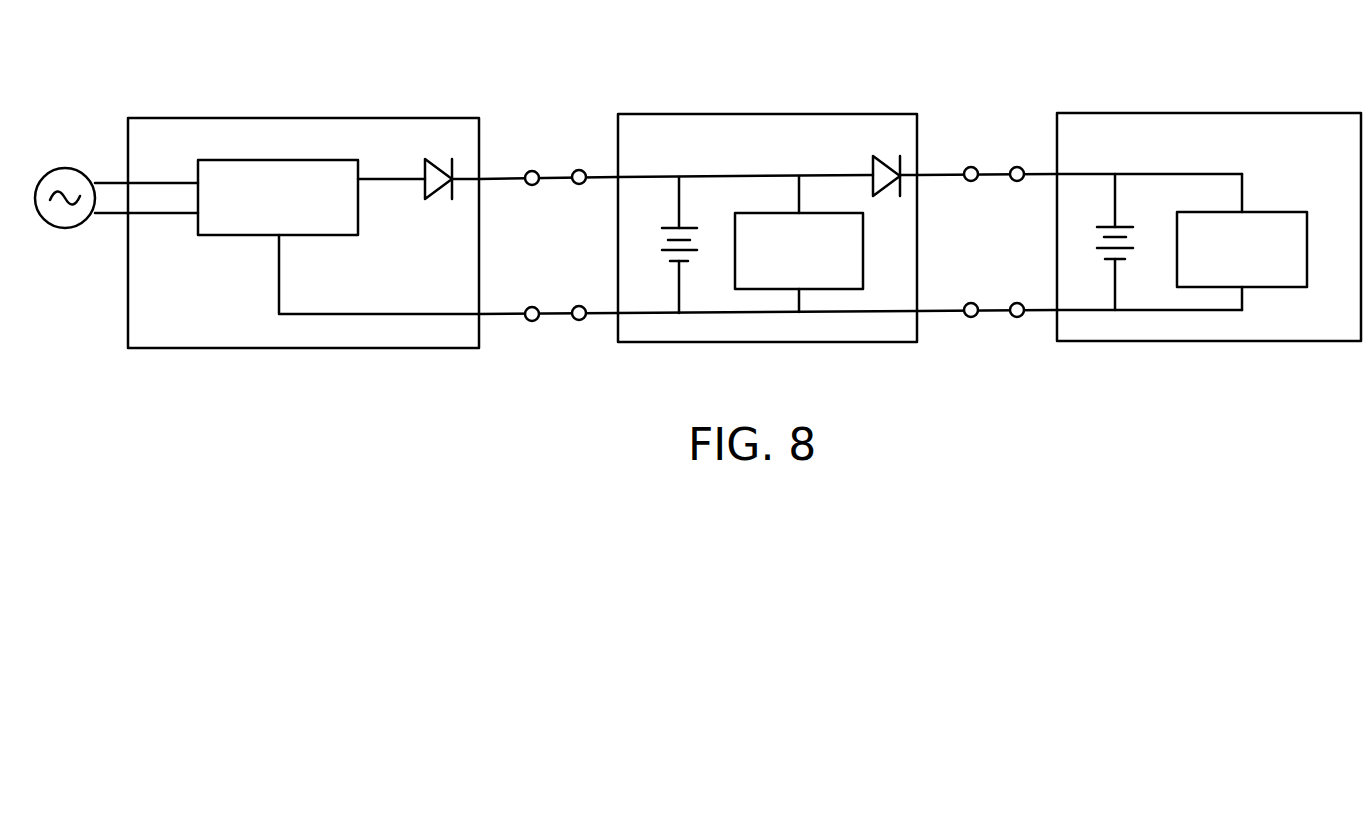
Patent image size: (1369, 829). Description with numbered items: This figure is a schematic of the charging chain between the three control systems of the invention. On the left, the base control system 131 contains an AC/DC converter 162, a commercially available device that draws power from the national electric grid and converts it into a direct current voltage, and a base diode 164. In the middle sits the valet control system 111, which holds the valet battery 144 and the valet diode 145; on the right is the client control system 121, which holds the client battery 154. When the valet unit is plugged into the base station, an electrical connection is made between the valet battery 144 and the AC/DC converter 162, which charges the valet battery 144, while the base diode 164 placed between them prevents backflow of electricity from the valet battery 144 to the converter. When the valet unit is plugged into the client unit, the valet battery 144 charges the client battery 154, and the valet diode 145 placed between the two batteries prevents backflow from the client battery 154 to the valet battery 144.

The base control system 131 is at (358, 118).
The AC/DC converter 162 is at (288, 159).
The base diode 164 is at (433, 160).
The valet control system 111 is at (743, 114).
The valet battery 144 is at (662, 250).
The valet diode 145 is at (879, 157).
The client control system 121 is at (1193, 113).
The client battery 154 is at (1108, 260).